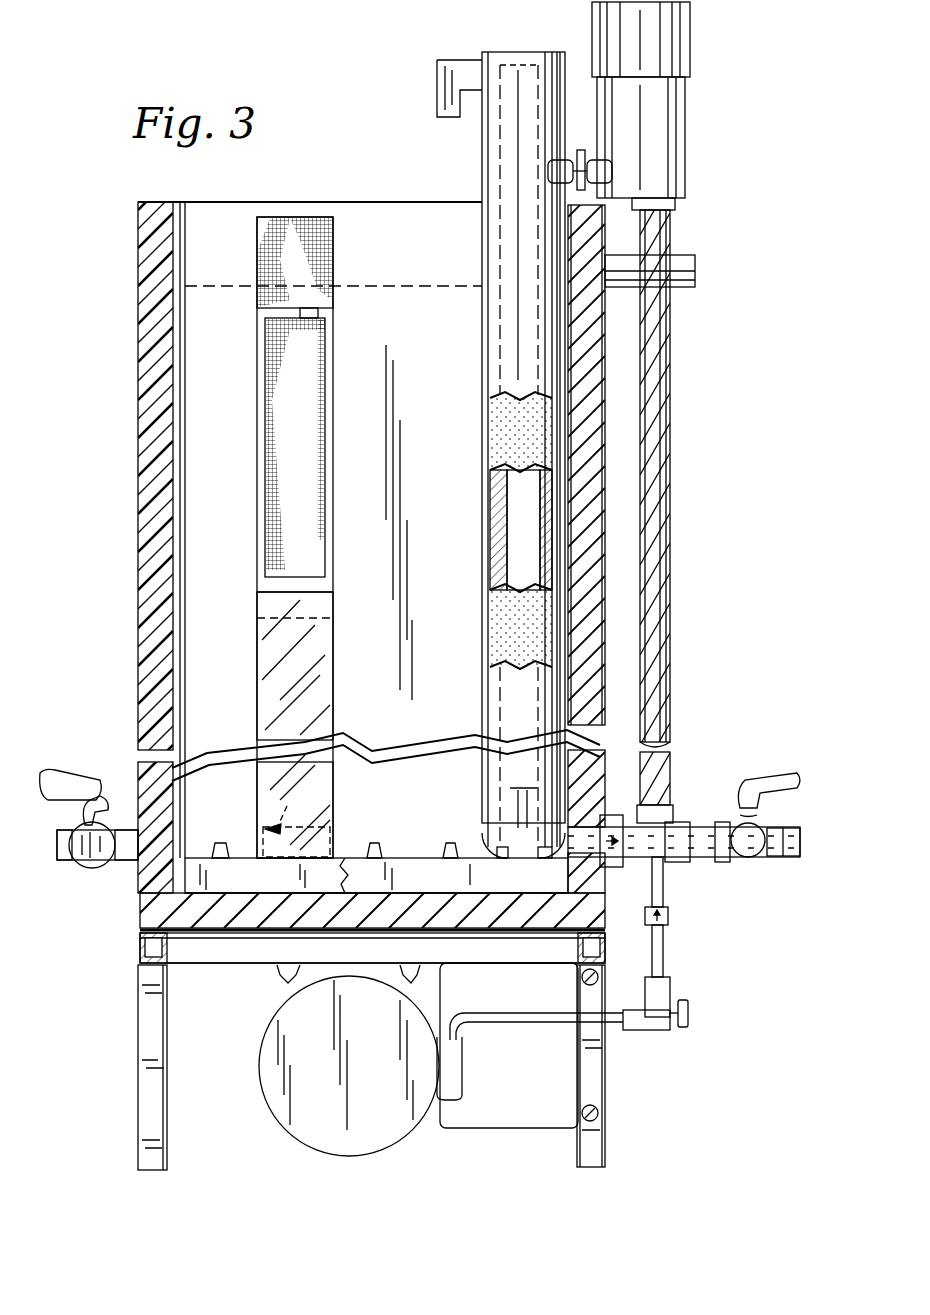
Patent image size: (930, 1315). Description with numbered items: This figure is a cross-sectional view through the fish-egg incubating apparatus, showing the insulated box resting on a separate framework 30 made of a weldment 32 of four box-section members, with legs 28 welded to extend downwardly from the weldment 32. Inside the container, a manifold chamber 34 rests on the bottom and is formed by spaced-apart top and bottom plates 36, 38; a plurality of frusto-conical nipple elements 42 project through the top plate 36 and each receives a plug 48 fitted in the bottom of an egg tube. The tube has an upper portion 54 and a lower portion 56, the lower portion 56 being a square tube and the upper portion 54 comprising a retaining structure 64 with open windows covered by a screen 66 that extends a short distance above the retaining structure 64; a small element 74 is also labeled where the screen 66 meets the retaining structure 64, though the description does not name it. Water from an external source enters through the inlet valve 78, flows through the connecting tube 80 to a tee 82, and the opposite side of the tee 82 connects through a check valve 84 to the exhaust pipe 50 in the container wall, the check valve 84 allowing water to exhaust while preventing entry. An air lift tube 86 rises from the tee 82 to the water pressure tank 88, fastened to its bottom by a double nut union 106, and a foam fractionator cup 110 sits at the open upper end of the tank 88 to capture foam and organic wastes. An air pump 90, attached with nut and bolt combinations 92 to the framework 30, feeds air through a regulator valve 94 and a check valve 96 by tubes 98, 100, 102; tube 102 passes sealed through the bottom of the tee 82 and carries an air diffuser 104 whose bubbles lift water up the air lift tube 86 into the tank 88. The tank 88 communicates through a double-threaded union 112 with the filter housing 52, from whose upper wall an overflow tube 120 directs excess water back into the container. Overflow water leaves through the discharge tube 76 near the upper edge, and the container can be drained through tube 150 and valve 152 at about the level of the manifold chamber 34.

The legs 28 is at (136, 1084).
The framework 30 is at (136, 1004).
The weldment 32 is at (140, 953).
The manifold chamber 34 is at (160, 883).
The top plate 36 is at (248, 858).
The bottom plate 38 is at (300, 893).
The nipple elements 42 is at (219, 843).
The plug 48 is at (285, 808).
The exhaust pipe 50 is at (578, 828).
The filter housing 52 is at (482, 343).
The upper portion 54 is at (255, 407).
The lower portion 56 is at (257, 650).
The retaining structure 64 is at (333, 324).
The screen 66 is at (333, 252).
The connector 74 is at (318, 312).
The discharge tube 76 is at (695, 264).
The inlet valve 78 is at (752, 780).
The connecting tube 80 is at (722, 822).
The tee 82 is at (688, 822).
The check valve 84 is at (612, 815).
The air lift tube 86 is at (670, 440).
The water pressure tank 88 is at (686, 114).
The air pump 90 is at (278, 1133).
The nut and bolt combinations 92 is at (282, 980).
The regulator valve 94 is at (658, 1032).
The check valve 96 is at (668, 917).
The tube 98 is at (528, 1022).
The tube 100 is at (663, 952).
The tube 102 is at (663, 884).
The air stone or air diffuser 104 is at (668, 790).
The double nut union 106 is at (675, 206).
The foam fractionator cup 110 is at (690, 44).
The double-threaded union 112 is at (580, 152).
The overflow tube 120 is at (452, 62).
The tube 150 is at (118, 830).
The valve 152 is at (102, 868).